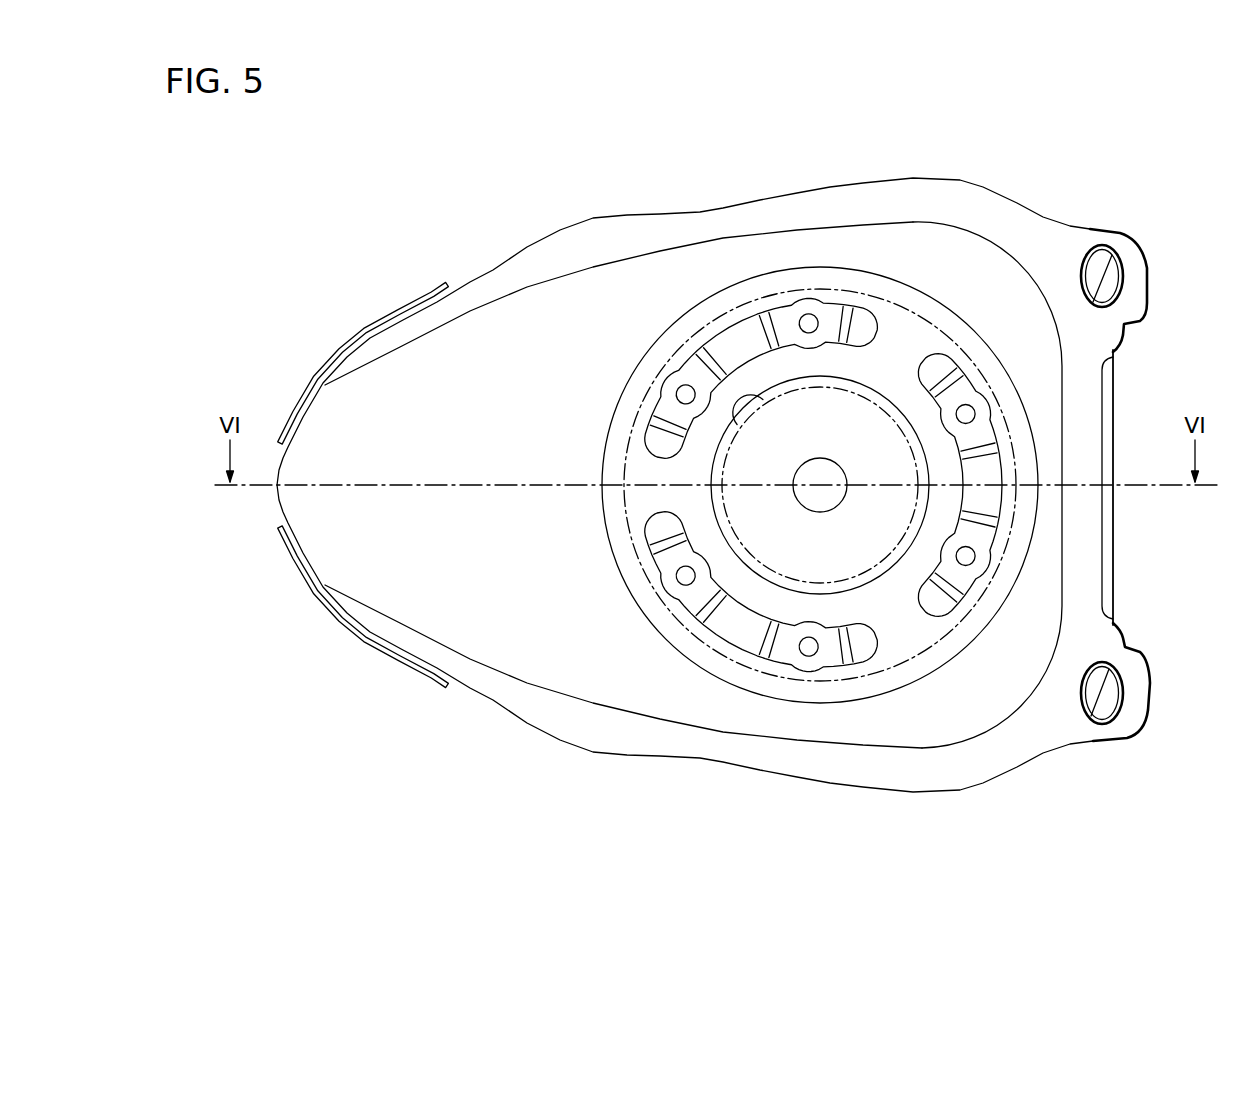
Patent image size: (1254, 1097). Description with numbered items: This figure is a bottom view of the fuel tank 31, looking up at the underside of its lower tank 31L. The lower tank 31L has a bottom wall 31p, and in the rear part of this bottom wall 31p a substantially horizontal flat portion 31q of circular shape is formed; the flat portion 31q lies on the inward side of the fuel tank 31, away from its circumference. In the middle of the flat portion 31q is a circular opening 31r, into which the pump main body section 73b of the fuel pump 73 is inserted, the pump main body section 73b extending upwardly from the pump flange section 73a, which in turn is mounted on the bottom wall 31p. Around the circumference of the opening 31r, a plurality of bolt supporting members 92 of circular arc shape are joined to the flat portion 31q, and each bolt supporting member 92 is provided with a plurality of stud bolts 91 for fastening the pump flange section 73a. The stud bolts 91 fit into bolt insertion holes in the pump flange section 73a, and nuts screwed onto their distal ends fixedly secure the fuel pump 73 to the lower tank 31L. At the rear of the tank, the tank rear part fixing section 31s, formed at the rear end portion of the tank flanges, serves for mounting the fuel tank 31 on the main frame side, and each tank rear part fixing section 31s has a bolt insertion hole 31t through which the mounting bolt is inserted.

The fuel tank 31 is at (333, 250).
The lower tank 31L is at (548, 265).
The bottom wall 31p is at (467, 617).
The flat portion 31q is at (904, 322).
The opening 31r is at (765, 400).
The tank rear part fixing section 31s is at (1103, 230).
The bolt insertion hole 31t is at (1122, 262).
The fuel pump 73 is at (722, 655).
The pump flange section 73a is at (887, 672).
The pump main body section 73b is at (896, 554).
The stud bolts 91 is at (683, 392).
The bolt supporting members 92 is at (859, 322).